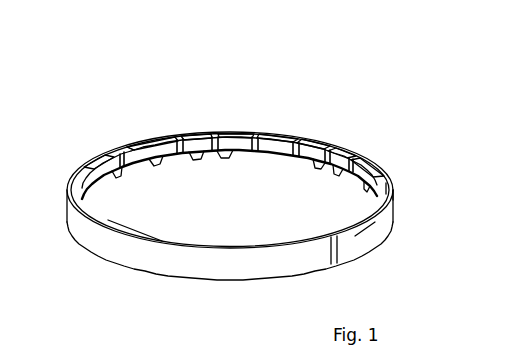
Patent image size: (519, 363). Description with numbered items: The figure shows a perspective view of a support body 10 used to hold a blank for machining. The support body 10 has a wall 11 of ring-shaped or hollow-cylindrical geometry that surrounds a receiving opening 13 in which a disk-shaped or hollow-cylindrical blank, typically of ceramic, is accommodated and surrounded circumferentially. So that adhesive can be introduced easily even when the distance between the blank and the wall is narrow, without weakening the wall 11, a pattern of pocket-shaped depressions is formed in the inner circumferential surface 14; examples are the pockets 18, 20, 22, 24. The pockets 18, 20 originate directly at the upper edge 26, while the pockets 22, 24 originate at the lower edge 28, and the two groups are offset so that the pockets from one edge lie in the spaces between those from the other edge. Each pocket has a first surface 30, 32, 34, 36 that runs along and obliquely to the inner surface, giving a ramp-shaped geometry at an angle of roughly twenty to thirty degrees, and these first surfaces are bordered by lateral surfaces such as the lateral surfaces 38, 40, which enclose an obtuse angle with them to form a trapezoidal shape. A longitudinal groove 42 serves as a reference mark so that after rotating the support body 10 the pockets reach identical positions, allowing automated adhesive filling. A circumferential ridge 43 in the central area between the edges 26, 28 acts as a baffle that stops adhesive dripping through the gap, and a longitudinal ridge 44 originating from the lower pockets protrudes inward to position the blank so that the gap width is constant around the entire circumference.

The support body 10 is at (388, 132).
The wall 11 is at (118, 245).
The receiving opening 13 is at (154, 213).
The inner circumferential surface 14 is at (231, 140).
The pocket-shaped depression 18 is at (157, 143).
The pocket-shaped depression 20 is at (283, 137).
The pocket-shaped depression 22 is at (225, 160).
The pocket-shaped depression 24 is at (337, 175).
The upper edge 26 is at (393, 190).
The lower edge 28 is at (233, 279).
The first surface 30 is at (140, 142).
The first surface 32 is at (263, 138).
The first surface 34 is at (197, 165).
The first surface 36 is at (318, 168).
The lateral surface 38 is at (127, 137).
The lateral surface 40 is at (178, 132).
The longitudinal groove 42 is at (340, 261).
The circumferential ridge 43 is at (310, 160).
The longitudinal ridge 44 is at (213, 147).